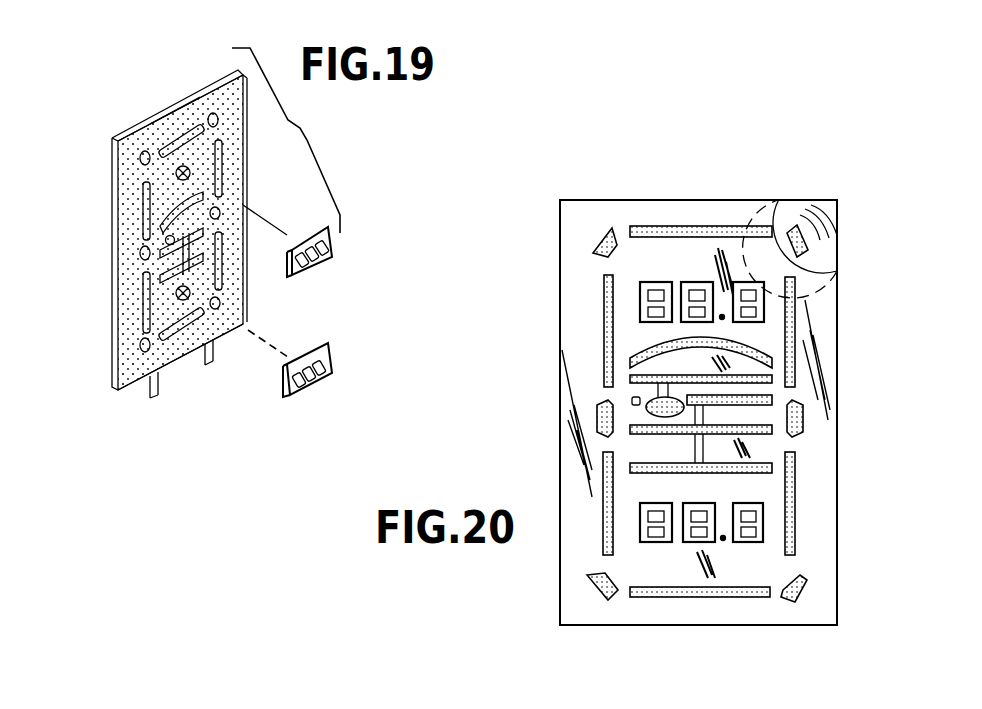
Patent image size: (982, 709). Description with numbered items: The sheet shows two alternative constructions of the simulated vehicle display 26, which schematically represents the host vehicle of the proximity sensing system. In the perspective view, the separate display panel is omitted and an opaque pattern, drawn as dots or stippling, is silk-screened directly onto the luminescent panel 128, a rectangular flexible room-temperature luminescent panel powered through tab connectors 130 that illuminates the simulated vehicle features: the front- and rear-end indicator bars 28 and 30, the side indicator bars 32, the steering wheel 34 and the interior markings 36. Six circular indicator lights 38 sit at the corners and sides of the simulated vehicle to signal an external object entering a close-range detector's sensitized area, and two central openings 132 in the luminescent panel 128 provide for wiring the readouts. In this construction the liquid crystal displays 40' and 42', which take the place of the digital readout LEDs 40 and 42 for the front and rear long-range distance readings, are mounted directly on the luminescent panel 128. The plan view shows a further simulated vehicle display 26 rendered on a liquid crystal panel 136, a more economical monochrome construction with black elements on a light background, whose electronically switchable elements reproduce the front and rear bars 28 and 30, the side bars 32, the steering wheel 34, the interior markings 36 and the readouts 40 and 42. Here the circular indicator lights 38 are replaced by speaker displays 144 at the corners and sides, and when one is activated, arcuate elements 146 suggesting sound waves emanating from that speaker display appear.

In FIG. 19, the simulated vehicle display 26 is at (130, 394).
In FIG. 20, the simulated vehicle display 26 is at (599, 197).
In FIG. 19, the front-end indicator bar 28 is at (167, 142).
In FIG. 20, the front-end indicator bar 28 is at (680, 226).
In FIG. 19, the rear-end indicator bar 30 is at (244, 321).
In FIG. 20, the rear-end indicator bar 30 is at (673, 598).
In FIG. 19, the side indicator bars 32 is at (143, 190).
In FIG. 20, the side indicator bars 32 is at (605, 305).
In FIG. 19, the steering wheel 34 is at (166, 241).
In FIG. 20, the steering wheel 34 is at (660, 392).
In FIG. 19, the interior markings 36 is at (165, 218).
In FIG. 20, the interior markings 36 is at (667, 343).
In FIG. 19, the circular indicator lights 38 is at (215, 113).
In FIG. 20, the digital readout LED 40 is at (693, 282).
In FIG. 20, the digital readout LED 42 is at (701, 507).
In FIG. 19, the liquid crystal display 40' is at (309, 162).
In FIG. 19, the liquid crystal display 42' is at (314, 353).
In FIG. 19, the luminescent panel 128 is at (183, 106).
In FIG. 19, the tab connectors 130 is at (207, 341).
In FIG. 19, the central openings 132 is at (190, 173).
In FIG. 20, the liquid crystal panel 136 is at (632, 212).
In FIG. 20, the speaker displays 144 is at (595, 243).
In FIG. 20, the arcuate elements 146 is at (806, 205).